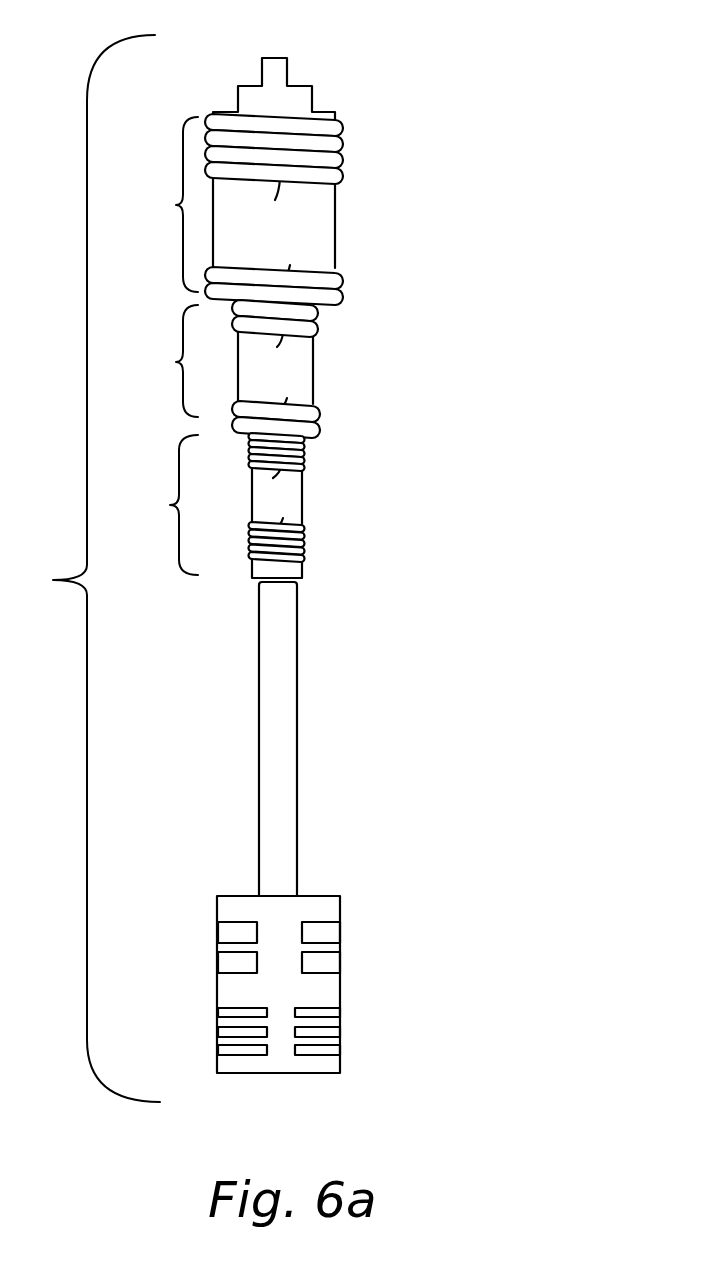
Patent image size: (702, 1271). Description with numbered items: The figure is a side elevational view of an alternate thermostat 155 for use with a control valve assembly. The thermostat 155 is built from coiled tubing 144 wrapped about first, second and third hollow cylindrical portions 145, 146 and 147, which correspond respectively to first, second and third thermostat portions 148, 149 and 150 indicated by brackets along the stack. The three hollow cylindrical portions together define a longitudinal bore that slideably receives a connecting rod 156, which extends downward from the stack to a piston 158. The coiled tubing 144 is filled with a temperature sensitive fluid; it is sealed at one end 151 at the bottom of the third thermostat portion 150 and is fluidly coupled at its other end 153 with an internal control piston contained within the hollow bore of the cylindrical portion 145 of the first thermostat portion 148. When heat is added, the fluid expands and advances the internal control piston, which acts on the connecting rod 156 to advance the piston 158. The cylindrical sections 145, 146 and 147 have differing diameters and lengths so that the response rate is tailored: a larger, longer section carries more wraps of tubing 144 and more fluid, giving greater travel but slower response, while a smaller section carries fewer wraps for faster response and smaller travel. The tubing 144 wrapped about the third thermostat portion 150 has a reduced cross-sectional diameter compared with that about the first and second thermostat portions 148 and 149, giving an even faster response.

The coiled tubing 144 is at (340, 140).
The first hollow cylindrical portion 145 is at (274, 169).
The second hollow cylindrical portion 146 is at (275, 370).
The third hollow cylindrical portion 147 is at (277, 521).
The first thermostat portion 148 is at (164, 204).
The second thermostat portion 149 is at (164, 361).
The third thermostat portion 150 is at (161, 505).
The sealed end of coiled tubing 151 is at (306, 558).
The other end of coiled tubing 153 is at (213, 113).
The thermostat 155 is at (495, 205).
The connecting rod 156 is at (298, 827).
The piston 158 is at (341, 912).